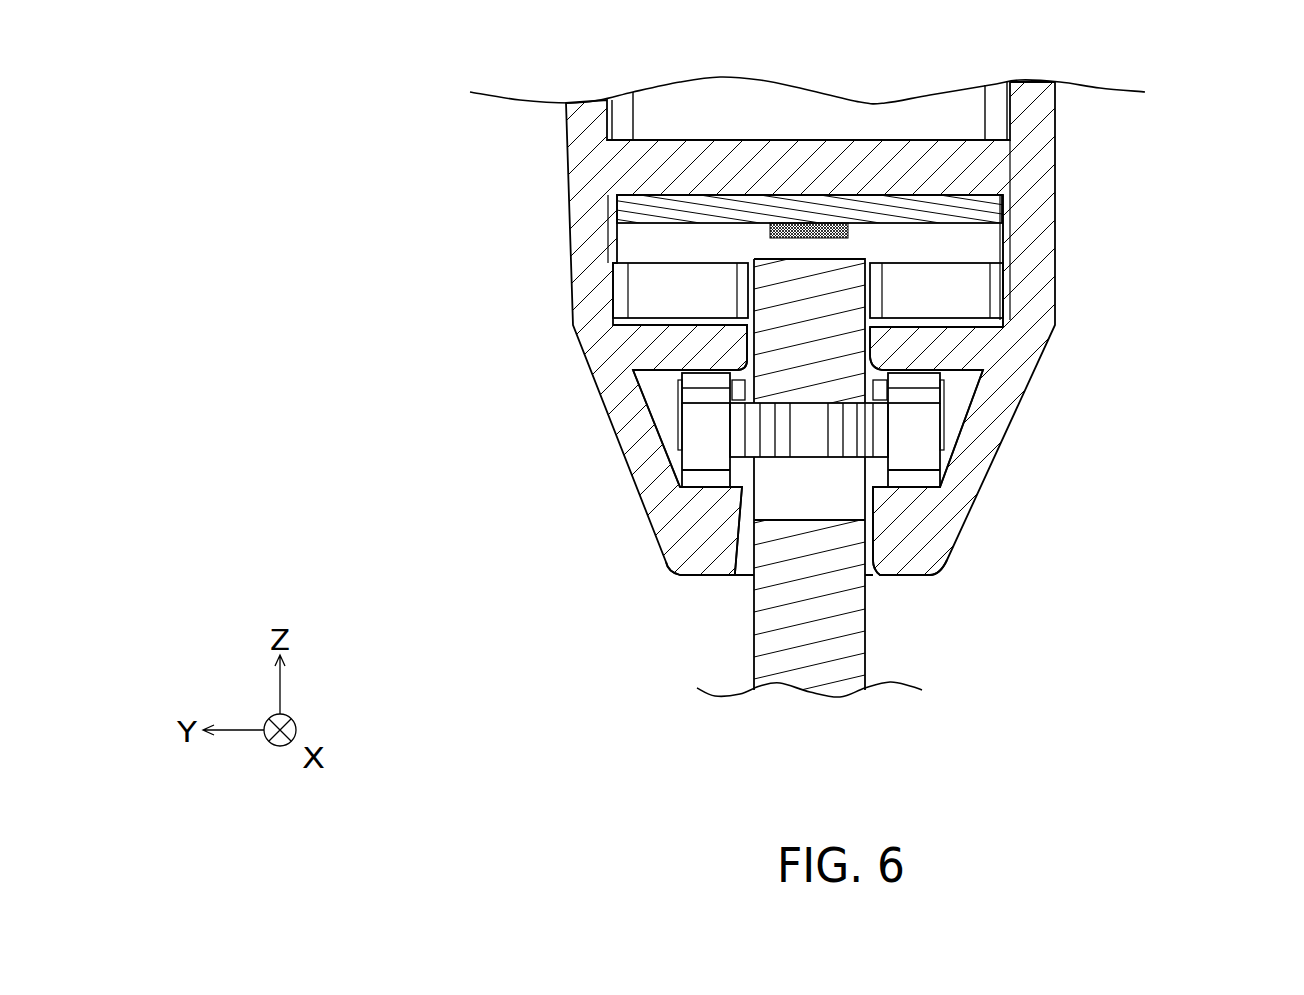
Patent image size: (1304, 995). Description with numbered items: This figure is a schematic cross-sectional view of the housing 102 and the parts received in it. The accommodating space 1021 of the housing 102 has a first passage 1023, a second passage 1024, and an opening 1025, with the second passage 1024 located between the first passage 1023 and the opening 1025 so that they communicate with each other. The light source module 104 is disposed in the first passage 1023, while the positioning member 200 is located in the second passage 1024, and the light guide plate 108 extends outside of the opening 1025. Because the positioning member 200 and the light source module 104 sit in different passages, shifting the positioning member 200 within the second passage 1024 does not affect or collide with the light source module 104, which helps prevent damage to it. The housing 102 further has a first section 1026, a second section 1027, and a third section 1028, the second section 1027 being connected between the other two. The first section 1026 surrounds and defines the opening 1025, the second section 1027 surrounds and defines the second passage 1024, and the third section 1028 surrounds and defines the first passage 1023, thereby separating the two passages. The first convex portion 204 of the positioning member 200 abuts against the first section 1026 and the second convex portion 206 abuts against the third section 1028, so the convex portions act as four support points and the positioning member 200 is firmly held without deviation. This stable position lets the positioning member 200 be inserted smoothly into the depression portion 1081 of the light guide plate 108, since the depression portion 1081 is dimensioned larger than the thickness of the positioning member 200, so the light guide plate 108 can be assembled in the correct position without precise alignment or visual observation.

The housing 102 is at (563, 168).
The light source module 104 is at (901, 211).
The light guide plate 108 is at (827, 629).
The depression portion 1081 is at (795, 533).
The accommodating space 1021 is at (1186, 220).
The first passage 1023 is at (1013, 238).
The second passage 1024 is at (972, 408).
The opening 1025 is at (885, 557).
The first section 1026 is at (707, 532).
The second section 1027 is at (645, 448).
The third section 1028 is at (687, 350).
The positioning member 200 is at (812, 430).
The first convex portion 204 is at (918, 481).
The second convex portion 206 is at (917, 382).